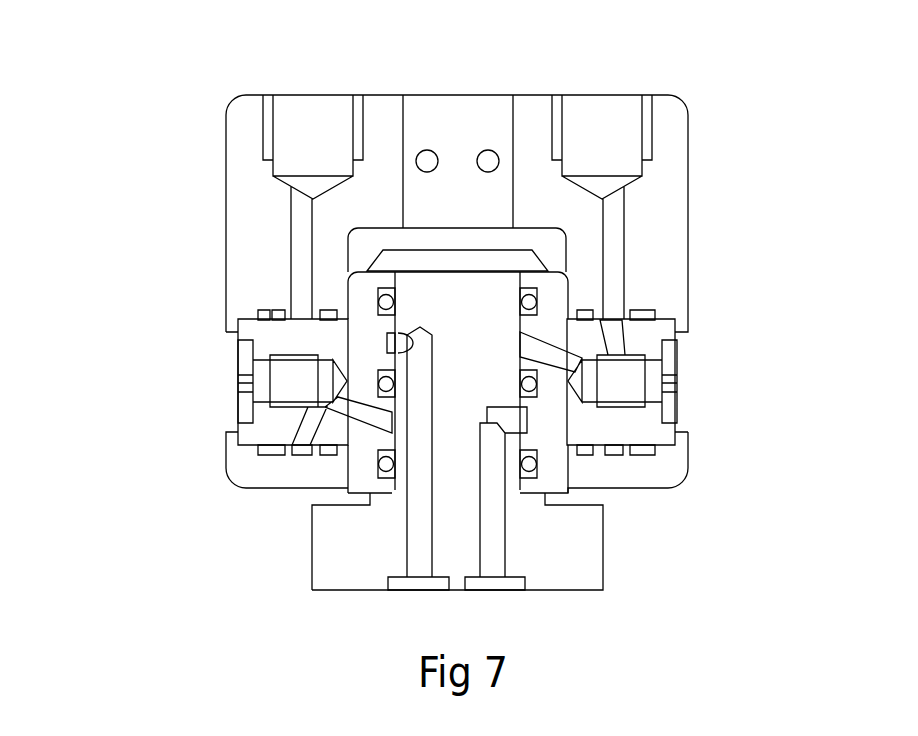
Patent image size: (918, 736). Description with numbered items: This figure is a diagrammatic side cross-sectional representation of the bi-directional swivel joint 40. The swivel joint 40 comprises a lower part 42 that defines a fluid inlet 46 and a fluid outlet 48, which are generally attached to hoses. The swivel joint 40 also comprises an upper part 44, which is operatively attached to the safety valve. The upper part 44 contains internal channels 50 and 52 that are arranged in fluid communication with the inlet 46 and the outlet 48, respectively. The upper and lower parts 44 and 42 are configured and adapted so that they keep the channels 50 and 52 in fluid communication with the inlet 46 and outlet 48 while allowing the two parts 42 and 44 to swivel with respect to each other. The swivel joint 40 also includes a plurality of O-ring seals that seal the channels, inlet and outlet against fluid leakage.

The bi-directional swivel joint 40 is at (760, 249).
The lower part 42 is at (240, 238).
The upper part 44 is at (593, 535).
The fluid inlet 46 is at (317, 118).
The fluid outlet 48 is at (617, 117).
The internal channel 50 is at (415, 548).
The internal channel 52 is at (497, 540).